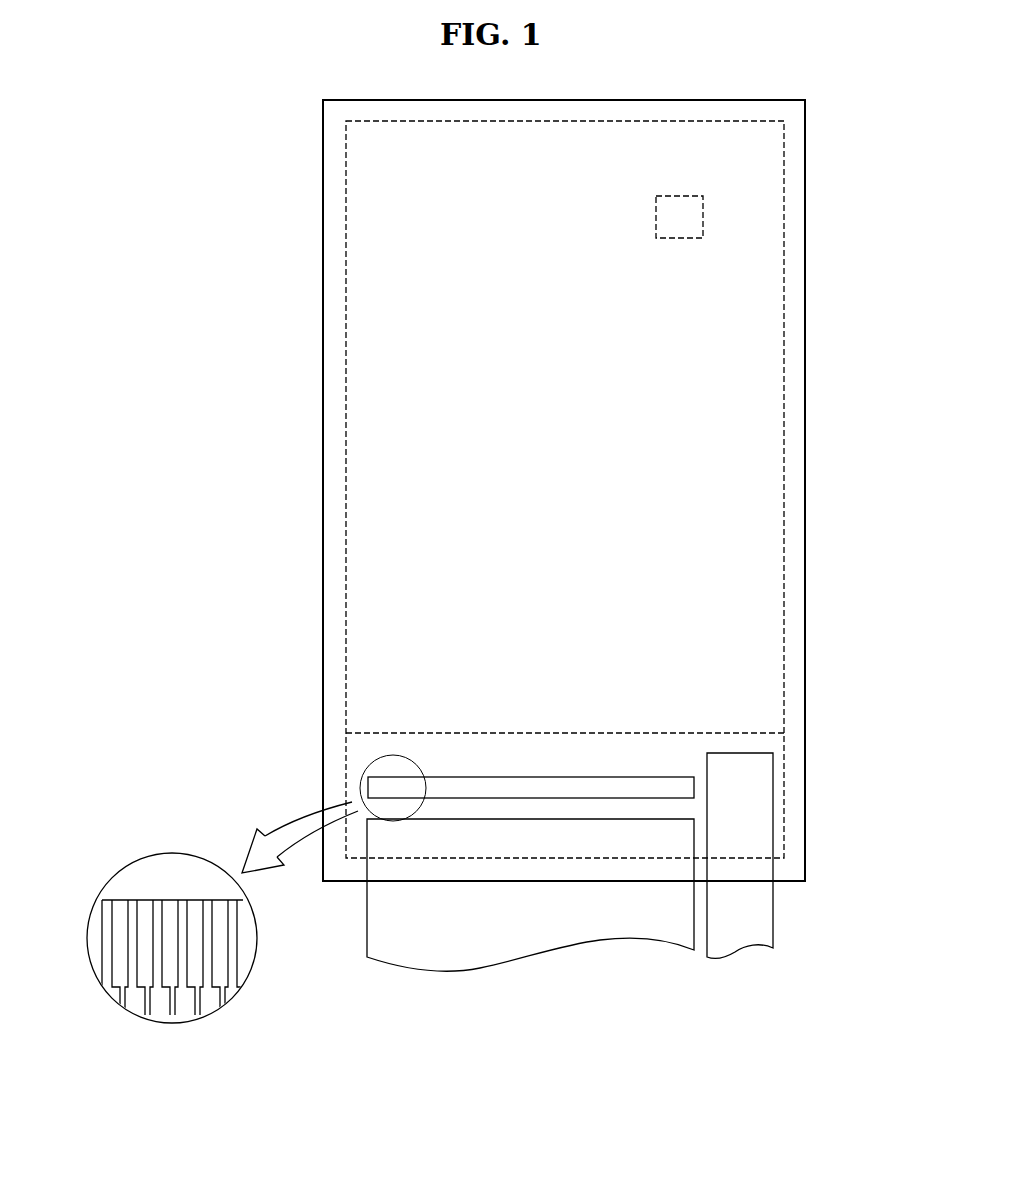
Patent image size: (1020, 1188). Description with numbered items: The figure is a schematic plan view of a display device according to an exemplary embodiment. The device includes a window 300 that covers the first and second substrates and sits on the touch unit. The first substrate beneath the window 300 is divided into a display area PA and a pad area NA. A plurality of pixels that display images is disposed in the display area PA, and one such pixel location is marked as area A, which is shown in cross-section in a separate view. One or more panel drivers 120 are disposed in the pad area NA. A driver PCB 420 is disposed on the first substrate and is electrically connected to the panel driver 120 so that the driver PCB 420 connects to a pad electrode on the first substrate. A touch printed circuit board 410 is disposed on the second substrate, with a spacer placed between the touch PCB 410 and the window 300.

The window 300 is at (805, 167).
The display area PA is at (790, 422).
The pad area NA is at (790, 777).
The area A is at (703, 217).
The panel driver 120 is at (368, 784).
The touch printed circuit board 410 is at (745, 905).
The driver PCB 420 is at (526, 927).